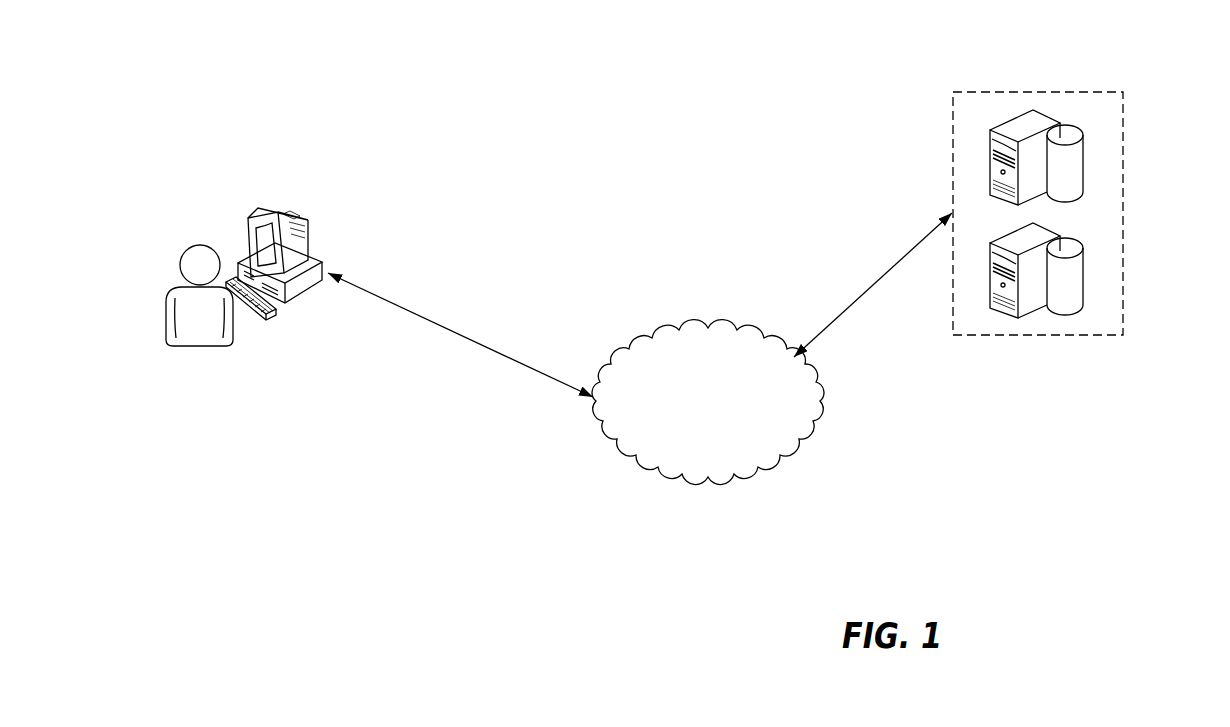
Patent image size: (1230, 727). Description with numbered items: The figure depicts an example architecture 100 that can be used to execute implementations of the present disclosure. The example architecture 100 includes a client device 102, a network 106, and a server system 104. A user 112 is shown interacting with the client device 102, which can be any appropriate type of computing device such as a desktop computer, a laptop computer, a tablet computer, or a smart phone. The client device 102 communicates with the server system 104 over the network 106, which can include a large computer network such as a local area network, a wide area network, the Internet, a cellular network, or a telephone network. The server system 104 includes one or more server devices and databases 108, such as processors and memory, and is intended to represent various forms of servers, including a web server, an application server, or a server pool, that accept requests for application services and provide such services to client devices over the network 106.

The example architecture 100 is at (557, 86).
The client device 102 is at (249, 219).
The server system 104 is at (1123, 212).
The network 106 is at (712, 329).
The server devices and databases 108 is at (990, 156).
The user 112 is at (200, 346).